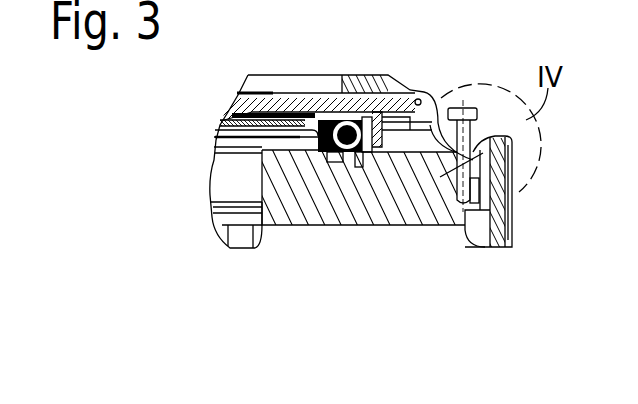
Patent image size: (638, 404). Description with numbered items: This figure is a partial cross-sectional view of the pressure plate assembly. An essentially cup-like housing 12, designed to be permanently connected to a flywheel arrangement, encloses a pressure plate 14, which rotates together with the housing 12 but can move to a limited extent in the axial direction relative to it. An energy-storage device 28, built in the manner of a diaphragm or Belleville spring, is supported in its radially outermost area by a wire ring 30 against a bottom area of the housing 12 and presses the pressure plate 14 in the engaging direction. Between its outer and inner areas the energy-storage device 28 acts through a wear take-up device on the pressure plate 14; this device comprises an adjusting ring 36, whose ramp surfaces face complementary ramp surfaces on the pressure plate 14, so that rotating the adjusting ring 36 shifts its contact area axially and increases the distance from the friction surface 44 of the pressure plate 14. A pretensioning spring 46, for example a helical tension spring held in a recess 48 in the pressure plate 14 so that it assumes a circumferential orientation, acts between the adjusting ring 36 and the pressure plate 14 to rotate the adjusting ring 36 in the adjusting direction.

The housing 12 is at (356, 76).
The pressure plate 14 is at (417, 205).
The energy-storage device 28 is at (277, 100).
The wire ring 30 is at (427, 92).
The adjusting ring 36 is at (388, 76).
The friction surface 44 is at (309, 226).
The pretensioning spring 46 is at (340, 167).
The recess 48 is at (347, 155).